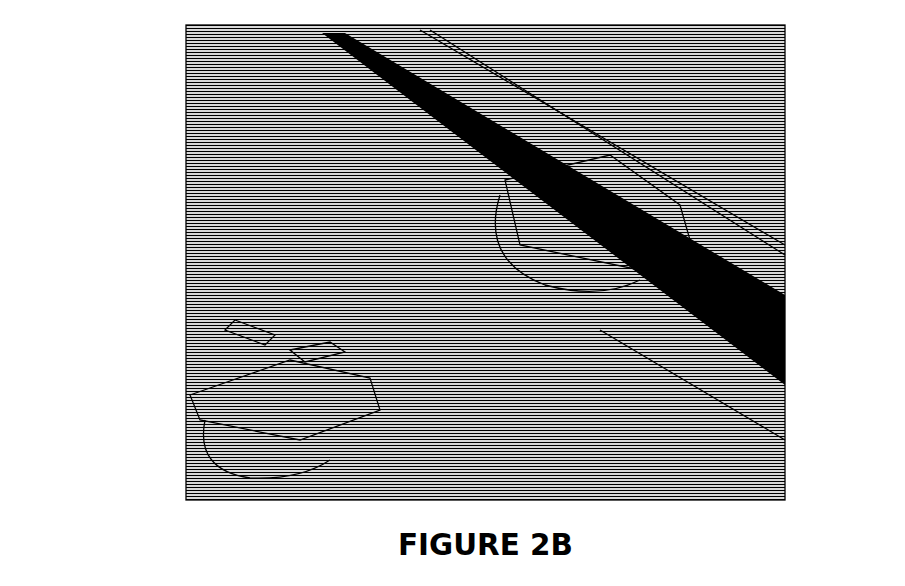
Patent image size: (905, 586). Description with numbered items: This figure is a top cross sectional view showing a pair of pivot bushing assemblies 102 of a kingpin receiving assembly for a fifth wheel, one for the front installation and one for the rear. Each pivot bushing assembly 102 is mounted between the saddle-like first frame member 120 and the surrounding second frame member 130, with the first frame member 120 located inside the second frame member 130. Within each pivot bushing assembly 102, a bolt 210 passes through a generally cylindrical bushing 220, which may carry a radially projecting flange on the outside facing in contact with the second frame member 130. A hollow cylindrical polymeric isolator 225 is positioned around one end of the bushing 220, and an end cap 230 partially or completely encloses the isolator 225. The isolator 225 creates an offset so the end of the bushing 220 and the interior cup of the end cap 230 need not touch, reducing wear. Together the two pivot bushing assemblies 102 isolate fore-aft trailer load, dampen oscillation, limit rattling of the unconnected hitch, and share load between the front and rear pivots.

The pivot bushing assembly 102 is at (724, 158).
The first frame member 120 is at (718, 392).
The second frame member 130 is at (727, 265).
The bolt 210 is at (643, 192).
The bushing 220 is at (597, 172).
The polymeric isolator 225 is at (300, 350).
The end cap 230 is at (248, 328).